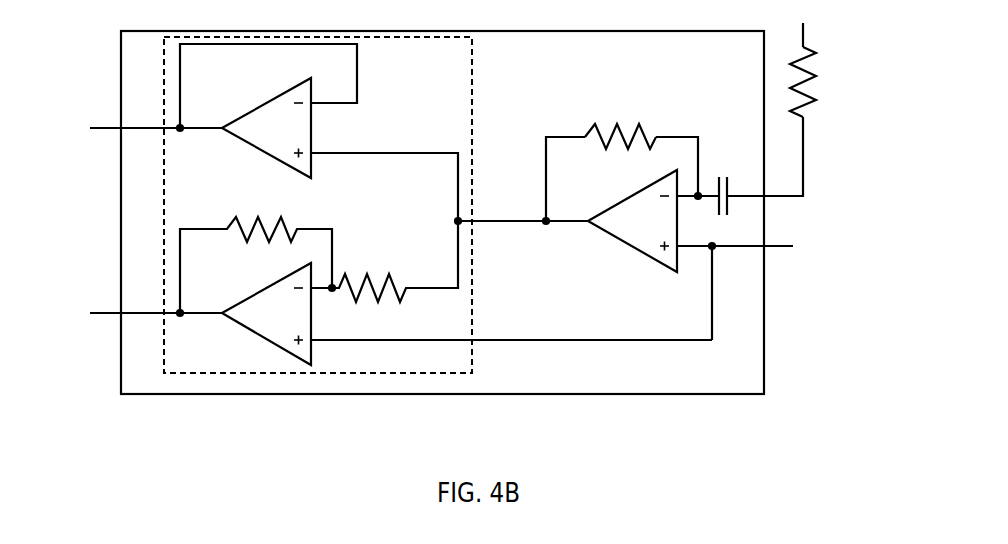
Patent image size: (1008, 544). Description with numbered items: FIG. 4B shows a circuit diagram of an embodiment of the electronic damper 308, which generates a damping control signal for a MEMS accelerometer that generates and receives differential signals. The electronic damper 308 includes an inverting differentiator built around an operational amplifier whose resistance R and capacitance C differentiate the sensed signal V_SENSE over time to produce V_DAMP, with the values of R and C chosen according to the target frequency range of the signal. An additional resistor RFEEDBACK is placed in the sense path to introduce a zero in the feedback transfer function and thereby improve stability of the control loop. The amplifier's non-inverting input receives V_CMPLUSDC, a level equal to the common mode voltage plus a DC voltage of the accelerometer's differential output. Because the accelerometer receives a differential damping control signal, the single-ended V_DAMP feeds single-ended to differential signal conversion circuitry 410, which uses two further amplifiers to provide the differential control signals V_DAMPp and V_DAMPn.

The electronic damper 308 is at (161, 62).
The single-ended to differential signal conversion circuitry 410 is at (465, 62).
The resistance R is at (620, 121).
The capacitance C is at (726, 180).
The additional resistor RFEEDBACK is at (852, 82).